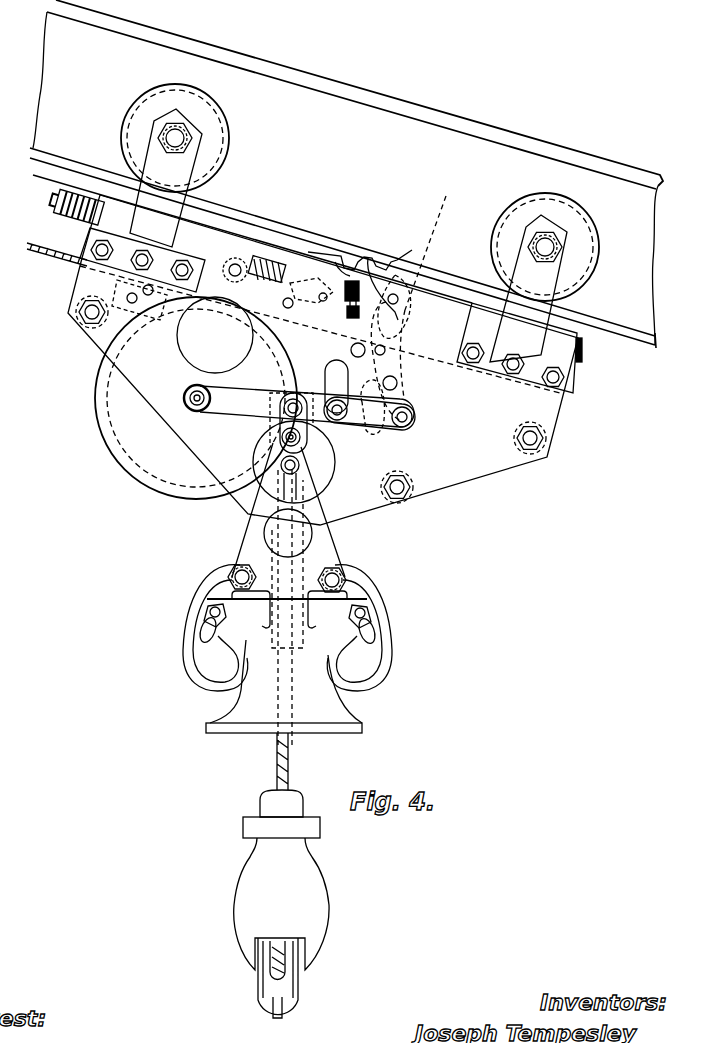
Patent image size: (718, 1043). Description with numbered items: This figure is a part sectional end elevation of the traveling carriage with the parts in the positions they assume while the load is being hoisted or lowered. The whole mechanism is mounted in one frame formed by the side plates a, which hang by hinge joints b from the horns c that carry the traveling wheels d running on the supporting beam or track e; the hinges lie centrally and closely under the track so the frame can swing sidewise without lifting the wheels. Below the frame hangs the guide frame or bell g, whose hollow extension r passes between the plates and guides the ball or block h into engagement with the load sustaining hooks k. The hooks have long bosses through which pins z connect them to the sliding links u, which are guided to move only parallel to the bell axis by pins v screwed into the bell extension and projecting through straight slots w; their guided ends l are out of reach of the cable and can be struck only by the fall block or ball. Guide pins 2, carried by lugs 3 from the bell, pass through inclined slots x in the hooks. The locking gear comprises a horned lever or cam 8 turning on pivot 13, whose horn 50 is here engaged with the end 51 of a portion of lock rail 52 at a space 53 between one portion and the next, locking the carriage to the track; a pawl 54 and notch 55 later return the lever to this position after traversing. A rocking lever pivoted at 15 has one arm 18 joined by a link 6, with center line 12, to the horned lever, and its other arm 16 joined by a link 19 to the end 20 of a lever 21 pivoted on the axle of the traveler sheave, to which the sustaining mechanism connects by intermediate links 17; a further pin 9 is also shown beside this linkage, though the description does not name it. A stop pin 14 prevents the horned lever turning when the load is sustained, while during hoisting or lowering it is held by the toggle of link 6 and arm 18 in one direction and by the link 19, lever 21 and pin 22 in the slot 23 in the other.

The side plates a is at (463, 466).
The hinge joints b is at (105, 221).
The horns c is at (348, 235).
The traveling wheels d is at (212, 155).
The supporting beam or track e is at (346, 174).
The guide frame or bell g is at (310, 717).
The ball or block h is at (292, 881).
The load sustaining hooks k is at (204, 666).
The guided ends of sliding links l is at (275, 632).
The hollow extension of the bell r is at (314, 490).
The sliding links u is at (312, 561).
The pins v is at (300, 466).
The straight slots w is at (286, 503).
The inclined slots x is at (200, 633).
The pins z is at (240, 568).
The guide pins 2 is at (206, 613).
The lugs 3 is at (213, 607).
The link 6 is at (395, 333).
The horned lever or cam 8 is at (384, 277).
The pivot pin 9 is at (405, 312).
The center line of the link 12 is at (438, 196).
The pivot of horned lever 13 is at (343, 290).
The stop pin 14 is at (351, 348).
The pivot of rocking lever 15 is at (399, 384).
The arm of rocking lever 16 is at (412, 404).
The intermediate links 17 is at (308, 395).
The arm of rocking lever 18 is at (395, 358).
The link 19 is at (392, 426).
The end of lever 20 is at (322, 418).
The lever 21 is at (231, 406).
The pin 22 is at (360, 425).
The slot 23 is at (338, 386).
The horn 50 is at (382, 266).
The end of lock rail portion 51 is at (366, 264).
The lock rail 52 is at (280, 236).
The space 53 is at (404, 266).
The pawl 54 is at (276, 292).
The notch 55 is at (342, 262).